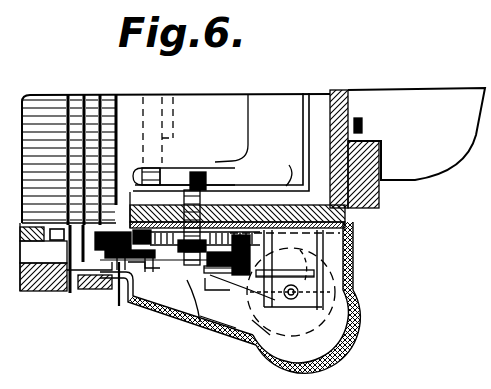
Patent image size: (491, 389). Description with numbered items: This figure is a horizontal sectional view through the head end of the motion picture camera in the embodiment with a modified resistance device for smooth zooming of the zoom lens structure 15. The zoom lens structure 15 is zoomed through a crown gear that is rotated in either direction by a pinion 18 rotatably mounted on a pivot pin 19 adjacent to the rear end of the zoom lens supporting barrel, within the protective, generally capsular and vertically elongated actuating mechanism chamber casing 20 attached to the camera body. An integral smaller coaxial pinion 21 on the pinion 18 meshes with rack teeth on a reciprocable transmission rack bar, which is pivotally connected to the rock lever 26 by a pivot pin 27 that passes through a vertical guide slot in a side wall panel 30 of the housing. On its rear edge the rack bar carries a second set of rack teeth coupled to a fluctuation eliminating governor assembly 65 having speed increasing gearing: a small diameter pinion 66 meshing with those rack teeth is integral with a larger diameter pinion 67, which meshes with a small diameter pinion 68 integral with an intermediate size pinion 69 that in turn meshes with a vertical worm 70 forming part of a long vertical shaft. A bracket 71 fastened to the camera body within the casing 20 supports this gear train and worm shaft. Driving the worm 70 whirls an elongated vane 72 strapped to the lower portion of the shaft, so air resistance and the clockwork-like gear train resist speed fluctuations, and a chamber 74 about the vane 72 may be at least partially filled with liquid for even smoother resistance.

The zoom lens structure 15 is at (41, 300).
The pinion 18 is at (70, 294).
The pivot pin 19 is at (119, 306).
The actuating mechanism chamber casing 20 is at (241, 338).
The coaxial pinion 21 is at (84, 266).
The rock lever 26 is at (253, 155).
The pivot pin 27 is at (198, 176).
The side wall panel 30 is at (240, 204).
The fluctuation eliminating governor assembly 65 is at (344, 281).
The small diameter pinion 66 is at (178, 312).
The larger diameter pinion 67 is at (138, 270).
The small diameter pinion 68 is at (257, 347).
The intermediate size pinion 69 is at (200, 322).
The worm 70 is at (345, 297).
The bracket 71 is at (348, 244).
The vane 72 is at (348, 320).
The chamber 74 is at (330, 265).